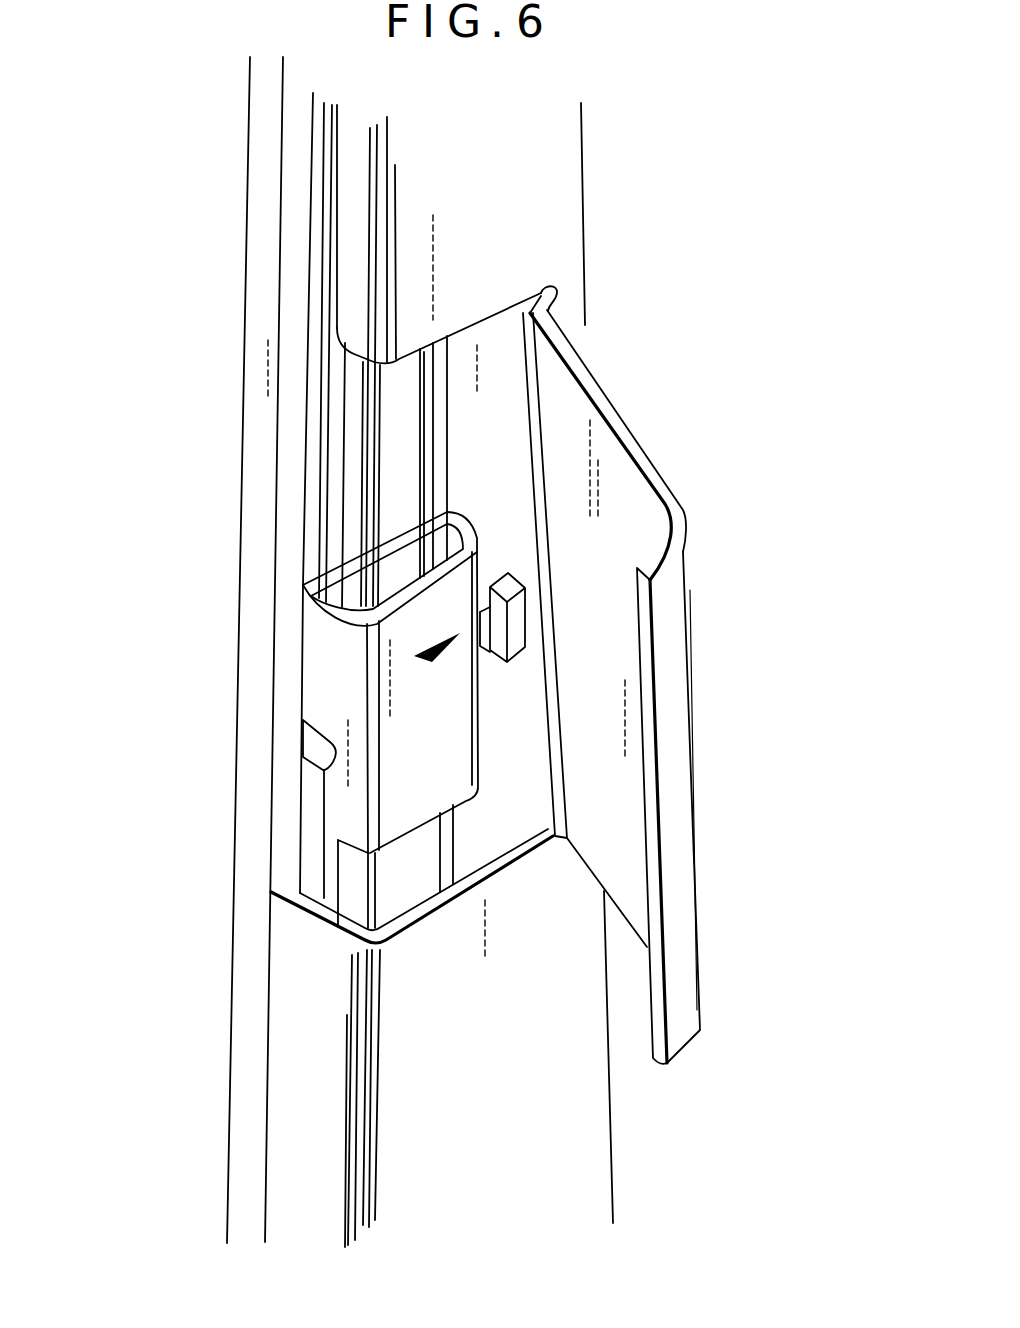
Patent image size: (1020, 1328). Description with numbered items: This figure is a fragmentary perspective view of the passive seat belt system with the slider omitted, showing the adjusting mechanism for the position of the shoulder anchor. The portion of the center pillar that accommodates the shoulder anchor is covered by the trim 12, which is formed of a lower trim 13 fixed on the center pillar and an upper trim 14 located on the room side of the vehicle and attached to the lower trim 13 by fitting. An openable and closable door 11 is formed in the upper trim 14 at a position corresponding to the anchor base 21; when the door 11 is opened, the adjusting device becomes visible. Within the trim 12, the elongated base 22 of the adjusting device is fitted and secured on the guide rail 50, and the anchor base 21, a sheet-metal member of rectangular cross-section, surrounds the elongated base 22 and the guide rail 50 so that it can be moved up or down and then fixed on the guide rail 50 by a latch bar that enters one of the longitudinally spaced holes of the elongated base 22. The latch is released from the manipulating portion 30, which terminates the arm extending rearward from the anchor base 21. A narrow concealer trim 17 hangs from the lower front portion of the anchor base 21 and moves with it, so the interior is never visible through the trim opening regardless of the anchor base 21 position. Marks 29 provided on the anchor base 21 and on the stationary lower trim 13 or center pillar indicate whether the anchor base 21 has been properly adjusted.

The door 11 is at (675, 709).
The trim 12 is at (512, 196).
The lower trim 13 is at (510, 420).
The upper trim 14 is at (580, 306).
The concealer trim 17 is at (312, 863).
The anchor base 21 is at (325, 703).
The elongated base 22 is at (441, 470).
The marks 29 is at (443, 652).
The manipulating portion 30 is at (518, 645).
The guide rail 50 is at (383, 495).